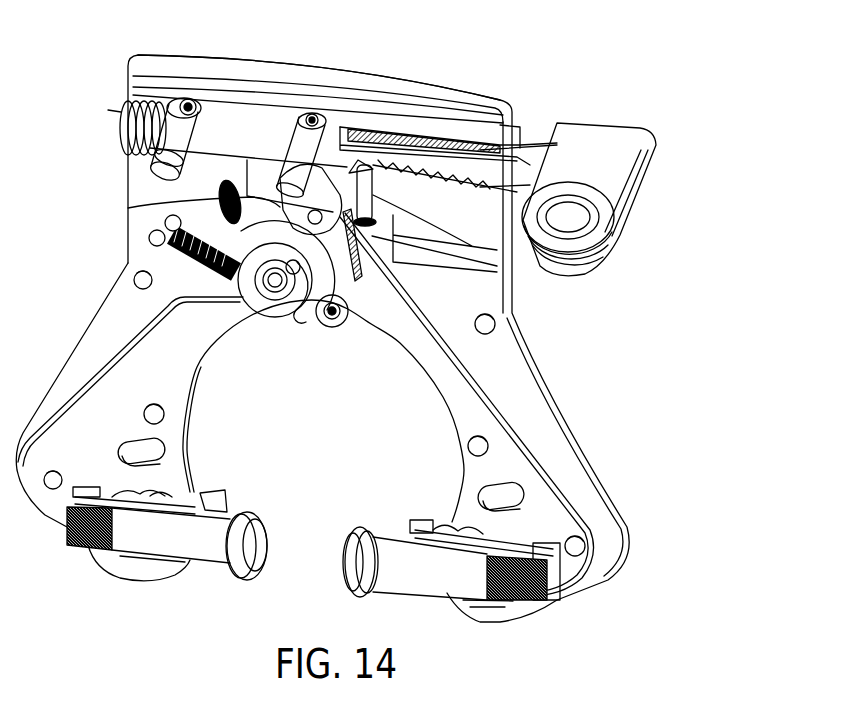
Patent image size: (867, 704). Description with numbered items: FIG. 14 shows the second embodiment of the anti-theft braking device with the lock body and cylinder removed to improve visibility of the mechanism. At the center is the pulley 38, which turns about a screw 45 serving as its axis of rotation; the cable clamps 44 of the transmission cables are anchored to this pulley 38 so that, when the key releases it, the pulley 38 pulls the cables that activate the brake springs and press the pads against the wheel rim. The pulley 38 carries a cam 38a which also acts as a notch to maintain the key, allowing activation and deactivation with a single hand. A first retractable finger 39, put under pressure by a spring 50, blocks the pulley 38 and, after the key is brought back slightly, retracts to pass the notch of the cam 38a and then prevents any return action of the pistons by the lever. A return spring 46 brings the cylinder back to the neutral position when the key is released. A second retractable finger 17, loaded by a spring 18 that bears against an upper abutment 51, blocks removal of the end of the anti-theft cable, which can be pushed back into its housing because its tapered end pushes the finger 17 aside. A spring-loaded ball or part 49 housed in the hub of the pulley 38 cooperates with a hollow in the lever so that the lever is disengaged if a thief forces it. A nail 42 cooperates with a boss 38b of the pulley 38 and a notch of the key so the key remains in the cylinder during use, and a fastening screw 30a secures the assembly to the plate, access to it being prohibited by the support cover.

The second retractable finger 17 is at (150, 168).
The spring 18 is at (187, 95).
The fastening screw 30a is at (452, 520).
The pulley 38 is at (327, 263).
The cam 38a is at (135, 208).
The boss 38b is at (347, 323).
The first retractable finger 39 is at (283, 187).
The nail 42 is at (513, 265).
The cable clamps 44 is at (360, 160).
The screw 45 is at (275, 285).
The return spring 46 is at (108, 110).
The ball or part 49 is at (293, 300).
The spring 50 is at (315, 211).
The upper abutment 51 is at (200, 110).